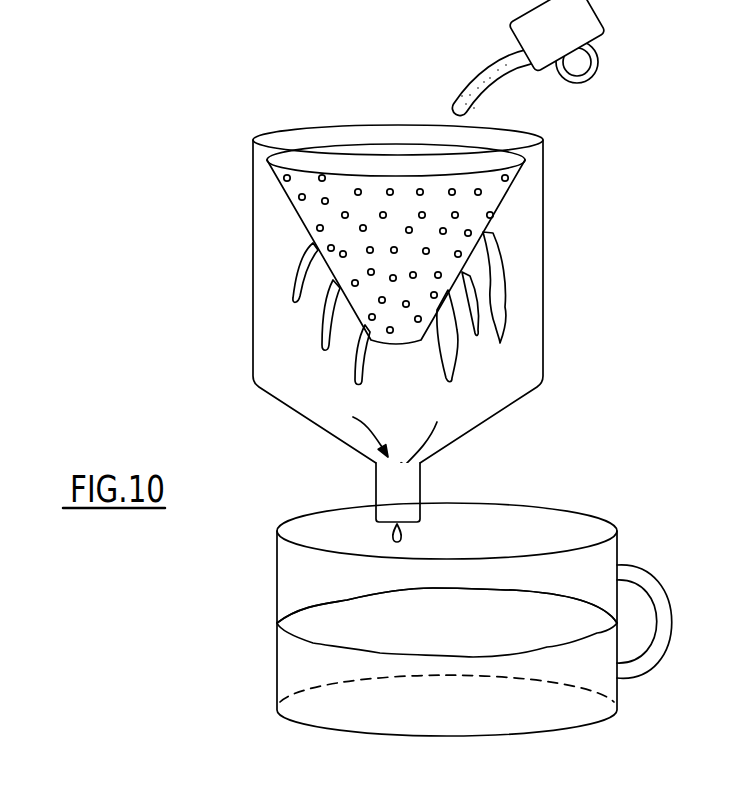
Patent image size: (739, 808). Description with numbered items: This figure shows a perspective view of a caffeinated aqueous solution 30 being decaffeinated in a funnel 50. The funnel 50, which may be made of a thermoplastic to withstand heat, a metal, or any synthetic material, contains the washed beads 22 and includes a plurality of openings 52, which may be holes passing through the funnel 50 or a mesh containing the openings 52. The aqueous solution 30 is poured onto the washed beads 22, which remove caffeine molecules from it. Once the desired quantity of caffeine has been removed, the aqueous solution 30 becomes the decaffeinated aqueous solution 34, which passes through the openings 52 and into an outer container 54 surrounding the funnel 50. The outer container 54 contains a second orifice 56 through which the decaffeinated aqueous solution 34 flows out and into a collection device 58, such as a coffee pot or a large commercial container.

The washed beads 22 is at (390, 151).
The aqueous solution 30 is at (490, 80).
The decaffeinated aqueous solution 34 is at (322, 335).
The funnel 50 is at (507, 204).
The openings 52 is at (356, 191).
The outer container 54 is at (285, 405).
The second orifice 56 is at (382, 480).
The collection device 58 is at (277, 607).